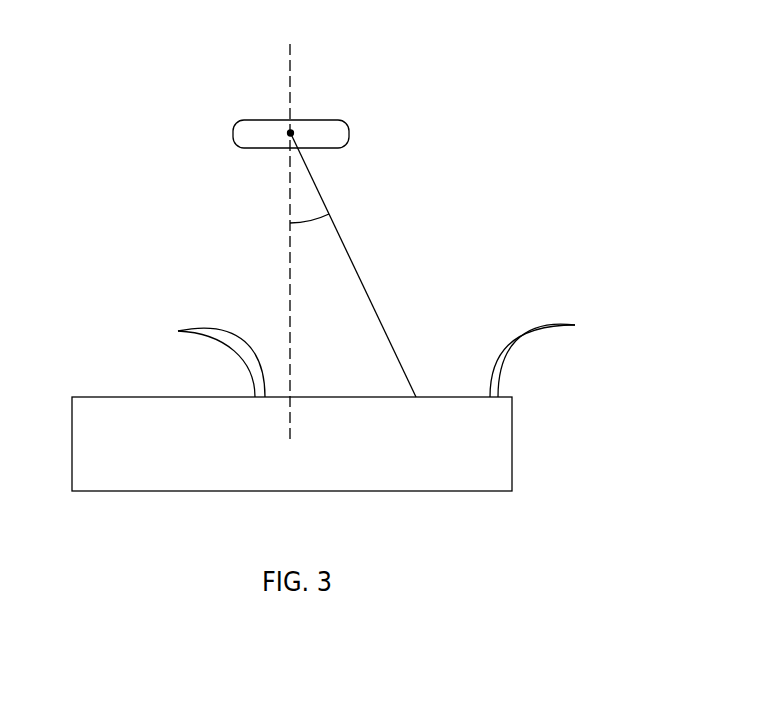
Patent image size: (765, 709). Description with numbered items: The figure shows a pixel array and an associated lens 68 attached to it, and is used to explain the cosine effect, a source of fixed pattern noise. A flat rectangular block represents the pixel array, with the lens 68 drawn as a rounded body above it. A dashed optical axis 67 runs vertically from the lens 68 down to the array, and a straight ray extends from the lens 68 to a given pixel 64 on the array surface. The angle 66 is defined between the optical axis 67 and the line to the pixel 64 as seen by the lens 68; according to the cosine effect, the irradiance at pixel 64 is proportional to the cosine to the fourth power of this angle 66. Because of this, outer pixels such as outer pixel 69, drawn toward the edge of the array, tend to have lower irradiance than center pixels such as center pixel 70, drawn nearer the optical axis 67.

The pixel 64 is at (418, 396).
The angle 66 is at (311, 221).
The optical axis 67 is at (290, 268).
The lens 68 is at (349, 135).
The outer pixel 69 is at (574, 325).
The center pixel 70 is at (180, 331).